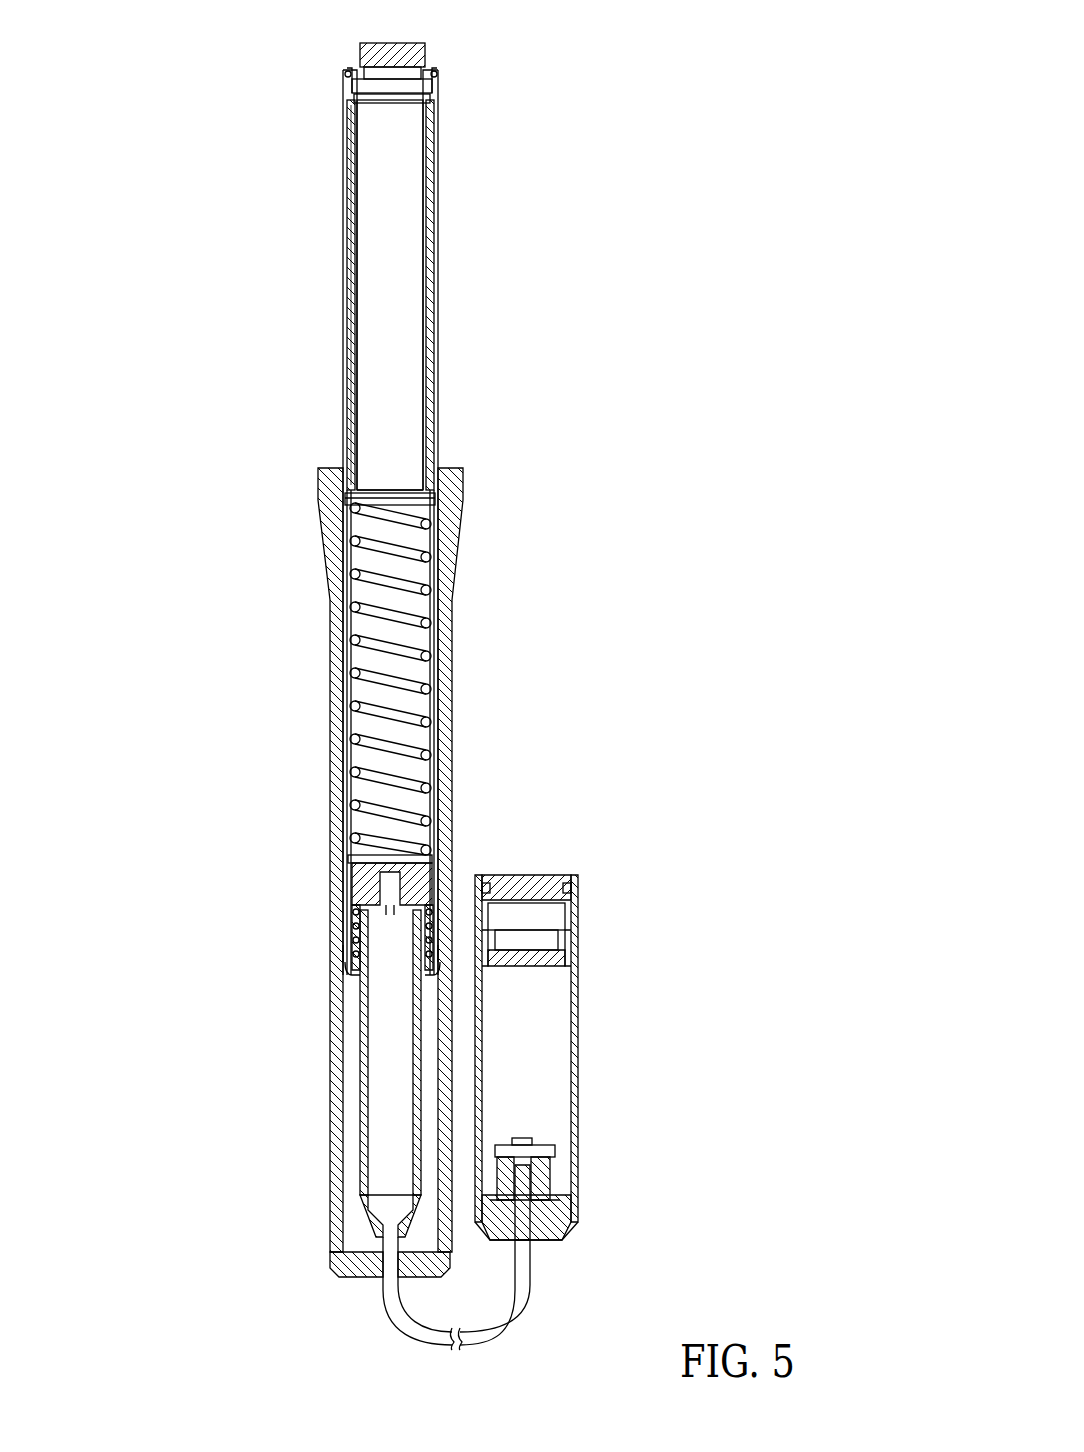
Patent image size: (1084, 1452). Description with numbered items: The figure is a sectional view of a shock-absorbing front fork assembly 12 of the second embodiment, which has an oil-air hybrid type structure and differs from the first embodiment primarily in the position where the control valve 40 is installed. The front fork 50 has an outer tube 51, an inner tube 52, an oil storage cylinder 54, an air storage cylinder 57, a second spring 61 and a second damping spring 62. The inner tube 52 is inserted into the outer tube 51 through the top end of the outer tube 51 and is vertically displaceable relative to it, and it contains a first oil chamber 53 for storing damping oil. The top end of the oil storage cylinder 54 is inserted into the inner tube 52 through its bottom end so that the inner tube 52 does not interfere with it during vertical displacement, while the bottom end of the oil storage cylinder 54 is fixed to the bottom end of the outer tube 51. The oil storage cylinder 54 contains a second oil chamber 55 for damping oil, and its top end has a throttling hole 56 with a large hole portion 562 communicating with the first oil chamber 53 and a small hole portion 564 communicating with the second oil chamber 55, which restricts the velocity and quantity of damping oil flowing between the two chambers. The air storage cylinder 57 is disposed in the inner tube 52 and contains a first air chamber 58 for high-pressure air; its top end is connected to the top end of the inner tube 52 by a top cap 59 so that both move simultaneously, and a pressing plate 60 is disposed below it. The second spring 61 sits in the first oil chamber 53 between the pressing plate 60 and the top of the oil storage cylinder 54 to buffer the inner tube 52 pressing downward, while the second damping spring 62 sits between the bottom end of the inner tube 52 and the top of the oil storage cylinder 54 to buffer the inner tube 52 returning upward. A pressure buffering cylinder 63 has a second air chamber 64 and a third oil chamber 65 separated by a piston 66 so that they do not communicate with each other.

The shock-absorbing front fork assembly 12 is at (740, 136).
The control valve 40 is at (568, 1266).
The front fork 50 is at (330, 44).
The outer tube 51 is at (330, 520).
The inner tube 52 is at (345, 222).
The first oil chamber 53 is at (370, 563).
The oil storage cylinder 54 is at (364, 998).
The second oil chamber 55 is at (372, 1055).
The throttling hole 56 is at (319, 888).
The air storage cylinder 57 is at (350, 266).
The first air chamber 58 is at (372, 340).
The top cap 59 is at (408, 50).
The pressing plate 60 is at (370, 492).
The second spring 61 is at (403, 583).
The second damping spring 62 is at (355, 950).
The pressure buffering cylinder 63 is at (668, 896).
The second air chamber 64 is at (566, 908).
The third oil chamber 65 is at (535, 1075).
The piston 66 is at (540, 963).
The large hole portion 562 is at (382, 870).
The small hole portion 564 is at (348, 927).